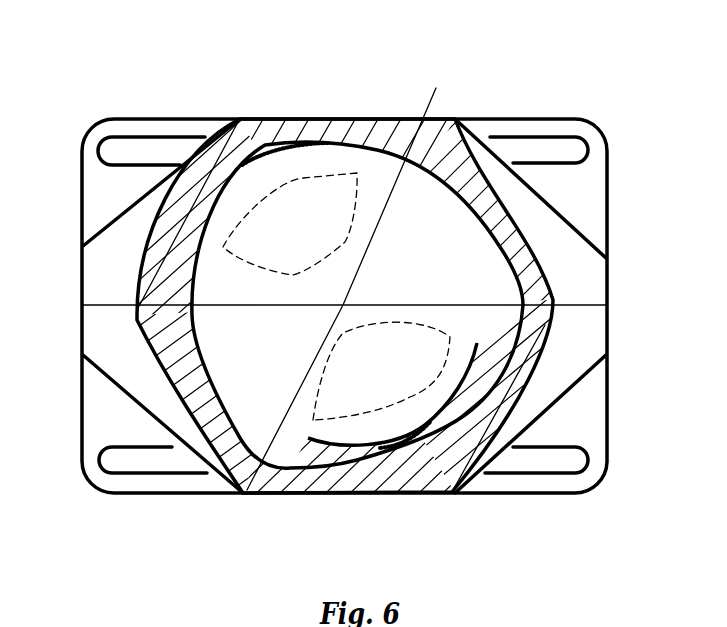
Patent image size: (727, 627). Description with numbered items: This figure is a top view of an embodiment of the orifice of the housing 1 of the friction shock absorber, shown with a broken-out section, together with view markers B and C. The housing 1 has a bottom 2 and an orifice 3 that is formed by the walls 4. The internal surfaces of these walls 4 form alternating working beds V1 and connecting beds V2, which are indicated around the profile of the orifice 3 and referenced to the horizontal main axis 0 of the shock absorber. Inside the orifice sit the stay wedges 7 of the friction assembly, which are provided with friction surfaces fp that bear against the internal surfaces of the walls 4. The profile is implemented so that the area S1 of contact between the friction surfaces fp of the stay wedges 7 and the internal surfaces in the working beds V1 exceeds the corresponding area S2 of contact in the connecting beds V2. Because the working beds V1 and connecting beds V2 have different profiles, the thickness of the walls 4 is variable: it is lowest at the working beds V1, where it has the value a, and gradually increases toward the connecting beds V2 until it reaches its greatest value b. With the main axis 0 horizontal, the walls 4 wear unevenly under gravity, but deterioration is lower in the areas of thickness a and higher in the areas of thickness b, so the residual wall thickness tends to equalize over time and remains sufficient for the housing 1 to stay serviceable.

The housing 1 is at (547, 230).
The bottom 2 is at (103, 193).
The orifice 3 is at (557, 327).
The walls 4 is at (178, 242).
The stay wedges 7 is at (330, 192).
The main axis 0 is at (345, 303).
The working beds V1 is at (343, 305).
The connecting beds V2 is at (390, 513).
The area of contact in working beds S1 is at (315, 138).
The area of contact in connecting beds S2 is at (343, 305).
The friction surfaces fp is at (328, 442).
The lowest wall thickness a is at (173, 463).
The greatest wall thickness b is at (128, 383).
The view direction B is at (212, 78).
The view direction C is at (483, 522).